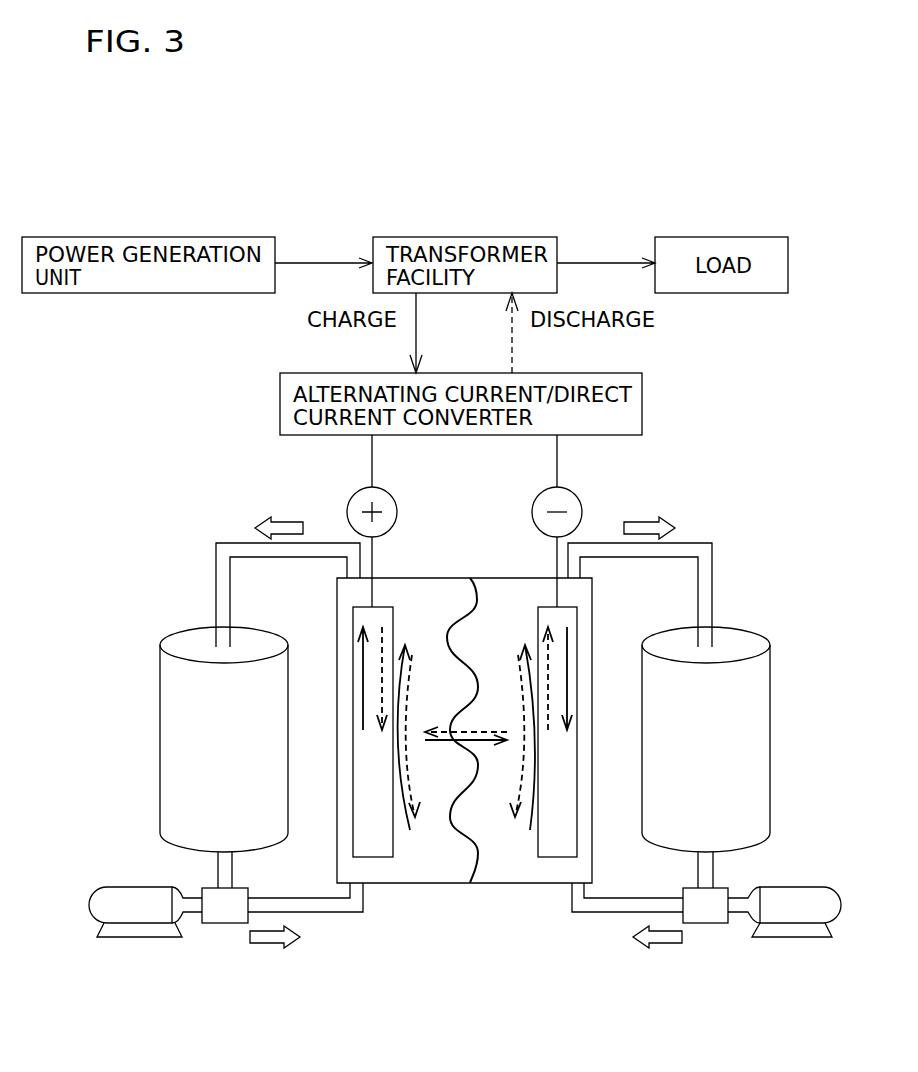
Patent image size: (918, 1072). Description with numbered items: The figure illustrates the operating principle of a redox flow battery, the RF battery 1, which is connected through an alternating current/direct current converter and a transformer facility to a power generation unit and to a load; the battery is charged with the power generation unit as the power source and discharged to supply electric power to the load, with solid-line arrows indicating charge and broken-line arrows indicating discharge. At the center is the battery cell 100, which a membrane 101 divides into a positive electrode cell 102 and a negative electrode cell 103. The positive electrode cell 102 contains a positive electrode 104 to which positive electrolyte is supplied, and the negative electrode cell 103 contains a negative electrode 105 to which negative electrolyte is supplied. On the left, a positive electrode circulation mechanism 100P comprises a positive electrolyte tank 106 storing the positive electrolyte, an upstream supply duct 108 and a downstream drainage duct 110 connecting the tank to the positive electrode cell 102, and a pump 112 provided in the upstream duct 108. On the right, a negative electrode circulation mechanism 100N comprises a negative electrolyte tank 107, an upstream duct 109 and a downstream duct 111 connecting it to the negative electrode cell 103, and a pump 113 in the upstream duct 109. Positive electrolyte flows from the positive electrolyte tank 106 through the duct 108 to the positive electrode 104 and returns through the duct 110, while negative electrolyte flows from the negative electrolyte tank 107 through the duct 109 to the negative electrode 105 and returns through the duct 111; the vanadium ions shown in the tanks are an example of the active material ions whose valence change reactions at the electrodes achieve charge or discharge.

The RF battery 1 is at (763, 476).
The battery cell 100 is at (537, 975).
The positive electrode circulation mechanism 100P is at (178, 958).
The negative electrode circulation mechanism 100N is at (766, 957).
The membrane 101 is at (458, 885).
The positive electrode cell 102 is at (405, 885).
The negative electrode cell 103 is at (528, 885).
The positive electrode 104 is at (352, 845).
The negative electrode 105 is at (582, 845).
The positive electrolyte tank 106 is at (178, 632).
The negative electrolyte tank 107 is at (752, 632).
The upstream duct 108 is at (325, 912).
The upstream duct 109 is at (607, 912).
The downstream duct 110 is at (233, 543).
The downstream duct 111 is at (697, 543).
The pump 112 is at (125, 885).
The pump 113 is at (808, 885).